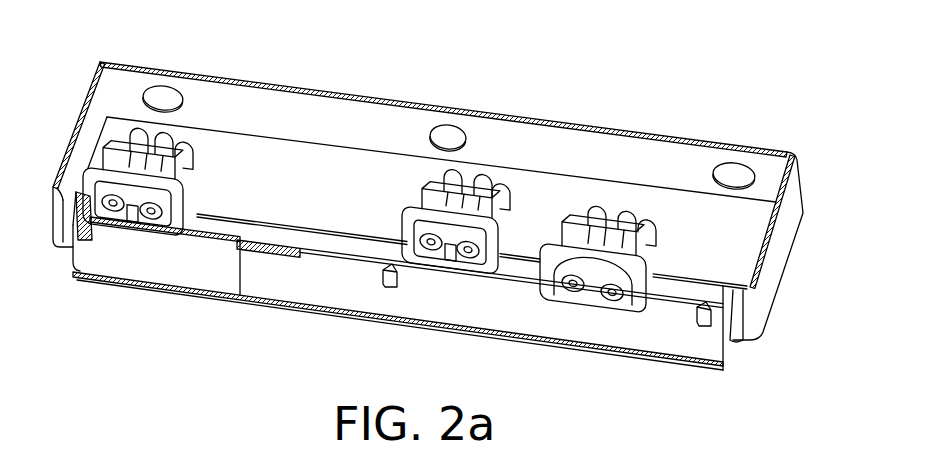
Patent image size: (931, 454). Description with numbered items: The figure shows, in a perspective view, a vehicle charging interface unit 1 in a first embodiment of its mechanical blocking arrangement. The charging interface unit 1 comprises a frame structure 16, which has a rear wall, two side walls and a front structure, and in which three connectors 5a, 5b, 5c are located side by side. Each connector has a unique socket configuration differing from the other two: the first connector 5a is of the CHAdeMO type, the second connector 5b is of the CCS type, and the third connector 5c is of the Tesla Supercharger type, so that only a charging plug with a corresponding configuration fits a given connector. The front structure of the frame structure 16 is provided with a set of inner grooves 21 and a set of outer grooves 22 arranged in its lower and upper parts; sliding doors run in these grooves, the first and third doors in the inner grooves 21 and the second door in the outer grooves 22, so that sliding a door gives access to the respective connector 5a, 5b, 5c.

The vehicle charging interface unit 1 is at (700, 67).
The frame structure 16 is at (558, 117).
The set of inner grooves 21 is at (687, 363).
The set of outer grooves 22 is at (643, 357).
The first connector 5a is at (583, 277).
The second connector 5b is at (447, 257).
The third connector 5c is at (137, 223).